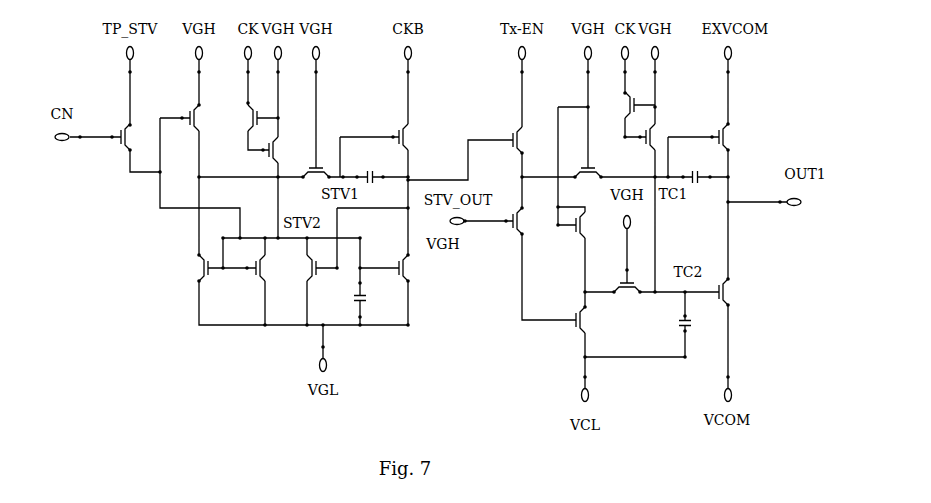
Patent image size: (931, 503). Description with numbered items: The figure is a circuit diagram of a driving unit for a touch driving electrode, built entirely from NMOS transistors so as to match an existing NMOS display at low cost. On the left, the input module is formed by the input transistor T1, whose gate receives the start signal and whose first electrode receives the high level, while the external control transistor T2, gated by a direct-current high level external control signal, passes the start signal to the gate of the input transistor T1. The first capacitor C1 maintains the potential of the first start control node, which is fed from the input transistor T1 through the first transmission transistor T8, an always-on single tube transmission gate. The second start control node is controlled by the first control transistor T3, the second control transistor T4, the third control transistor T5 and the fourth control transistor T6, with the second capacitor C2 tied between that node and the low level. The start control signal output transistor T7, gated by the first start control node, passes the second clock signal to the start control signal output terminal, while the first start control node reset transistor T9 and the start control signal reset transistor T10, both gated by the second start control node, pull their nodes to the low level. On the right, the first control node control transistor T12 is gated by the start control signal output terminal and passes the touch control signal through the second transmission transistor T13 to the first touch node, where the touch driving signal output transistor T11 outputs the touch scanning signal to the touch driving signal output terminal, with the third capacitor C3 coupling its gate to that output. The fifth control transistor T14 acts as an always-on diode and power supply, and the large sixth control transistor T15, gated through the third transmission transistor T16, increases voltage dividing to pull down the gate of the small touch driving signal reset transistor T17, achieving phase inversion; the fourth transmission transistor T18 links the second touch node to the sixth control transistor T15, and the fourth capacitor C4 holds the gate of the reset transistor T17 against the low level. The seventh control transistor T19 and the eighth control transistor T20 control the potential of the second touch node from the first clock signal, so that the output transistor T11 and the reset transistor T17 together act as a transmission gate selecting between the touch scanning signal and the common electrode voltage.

The input transistor T1 is at (183, 106).
The external control transistor T2 is at (114, 125).
The first control transistor T3 is at (240, 118).
The second control transistor T4 is at (286, 150).
The third control transistor T5 is at (252, 276).
The fourth control transistor T6 is at (299, 268).
The start control signal output transistor T7 is at (417, 137).
The first transmission transistor T8 is at (320, 158).
The first start control node reset transistor T9 is at (188, 268).
The start control signal reset transistor T10 is at (422, 268).
The touch driving signal output transistor T11 is at (742, 137).
The first control node control transistor T12 is at (503, 127).
The second transmission transistor T13 is at (575, 161).
The fifth control transistor T14 is at (567, 235).
The sixth control transistor T15 is at (564, 328).
The third transmission transistor T16 is at (502, 232).
The touch driving signal reset transistor T17 is at (742, 292).
The fourth transmission transistor T18 is at (626, 298).
The seventh control transistor T19 is at (613, 105).
The eighth control transistor T20 is at (670, 129).
The first capacitor C1 is at (373, 166).
The second capacitor C2 is at (373, 300).
The third capacitor C3 is at (704, 186).
The fourth capacitor C4 is at (674, 323).